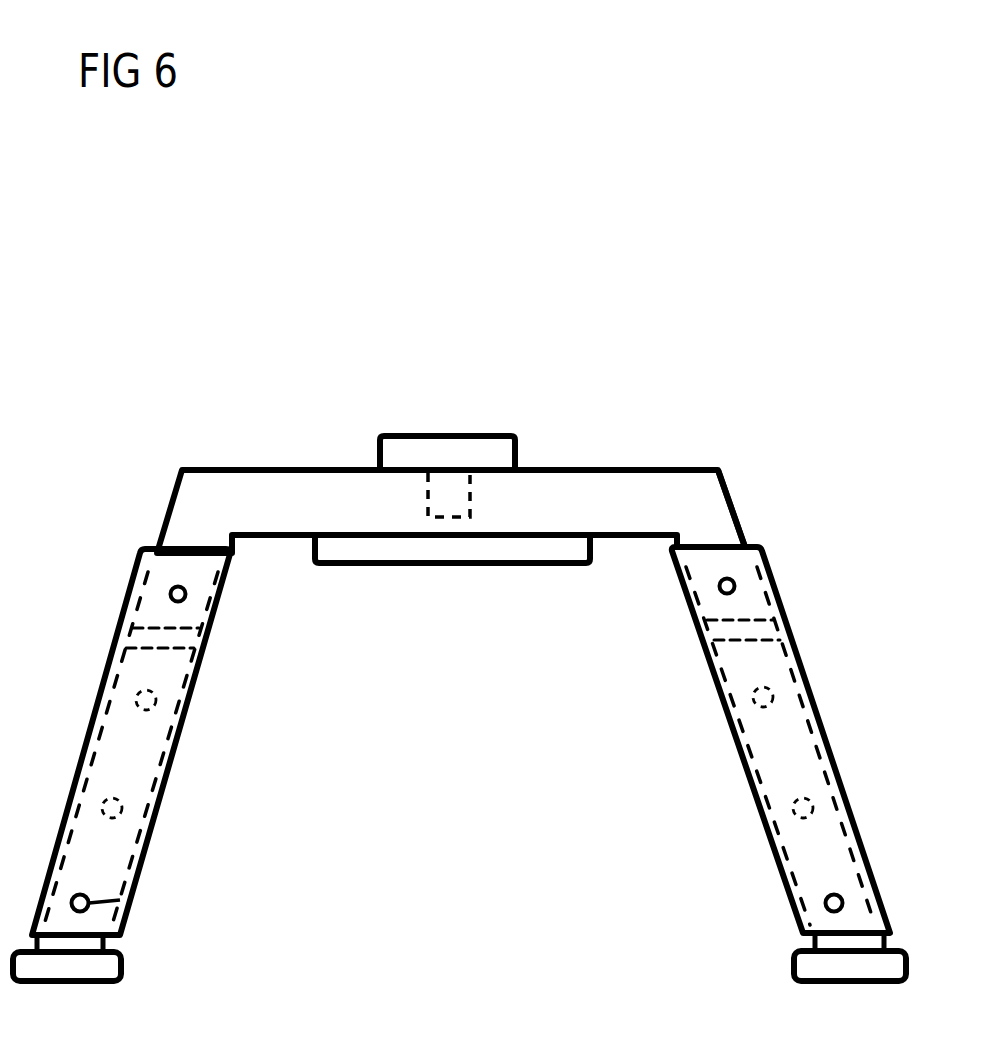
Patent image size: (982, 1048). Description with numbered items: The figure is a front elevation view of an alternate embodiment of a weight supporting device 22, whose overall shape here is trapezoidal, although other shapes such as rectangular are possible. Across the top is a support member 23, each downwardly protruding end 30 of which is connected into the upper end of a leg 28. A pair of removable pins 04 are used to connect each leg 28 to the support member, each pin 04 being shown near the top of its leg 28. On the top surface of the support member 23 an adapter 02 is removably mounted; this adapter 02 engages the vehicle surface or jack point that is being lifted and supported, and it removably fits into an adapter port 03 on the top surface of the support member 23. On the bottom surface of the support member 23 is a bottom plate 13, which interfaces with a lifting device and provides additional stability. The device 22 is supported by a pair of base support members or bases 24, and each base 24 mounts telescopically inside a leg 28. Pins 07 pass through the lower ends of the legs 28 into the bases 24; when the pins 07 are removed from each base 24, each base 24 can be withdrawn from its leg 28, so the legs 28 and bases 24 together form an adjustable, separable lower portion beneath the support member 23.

The weight supporting device 22 is at (347, 406).
The support member 23 is at (248, 469).
The adapter 02 is at (442, 434).
The adapter port 03 is at (476, 482).
The downwardly protruding end 30 is at (745, 521).
The removable pin 04 is at (185, 592).
The bottom plate 13 is at (540, 565).
The leg 28 is at (190, 733).
The pin 07 is at (140, 893).
The base support member 24 is at (106, 948).